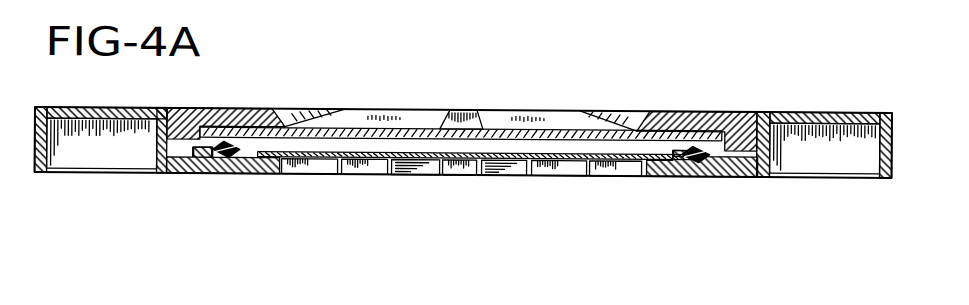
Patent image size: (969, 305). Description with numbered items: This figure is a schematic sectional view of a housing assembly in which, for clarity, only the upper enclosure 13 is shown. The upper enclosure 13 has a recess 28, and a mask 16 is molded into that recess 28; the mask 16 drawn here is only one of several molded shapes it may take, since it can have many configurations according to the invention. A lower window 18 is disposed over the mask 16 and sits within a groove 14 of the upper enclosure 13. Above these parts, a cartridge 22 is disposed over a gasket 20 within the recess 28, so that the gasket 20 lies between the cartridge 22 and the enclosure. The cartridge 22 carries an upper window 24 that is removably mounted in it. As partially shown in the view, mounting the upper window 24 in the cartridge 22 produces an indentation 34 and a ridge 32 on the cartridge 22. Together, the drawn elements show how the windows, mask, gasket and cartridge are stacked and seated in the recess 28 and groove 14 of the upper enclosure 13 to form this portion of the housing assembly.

The upper enclosure 13 is at (682, 88).
The groove 14 is at (218, 156).
The mask 16 is at (564, 168).
The lower window 18 is at (403, 174).
The gasket 20 is at (214, 141).
The cartridge 22 is at (503, 108).
The upper window 24 is at (304, 117).
The recess 28 is at (183, 156).
The ridge 32 is at (638, 106).
The indentation 34 is at (453, 113).